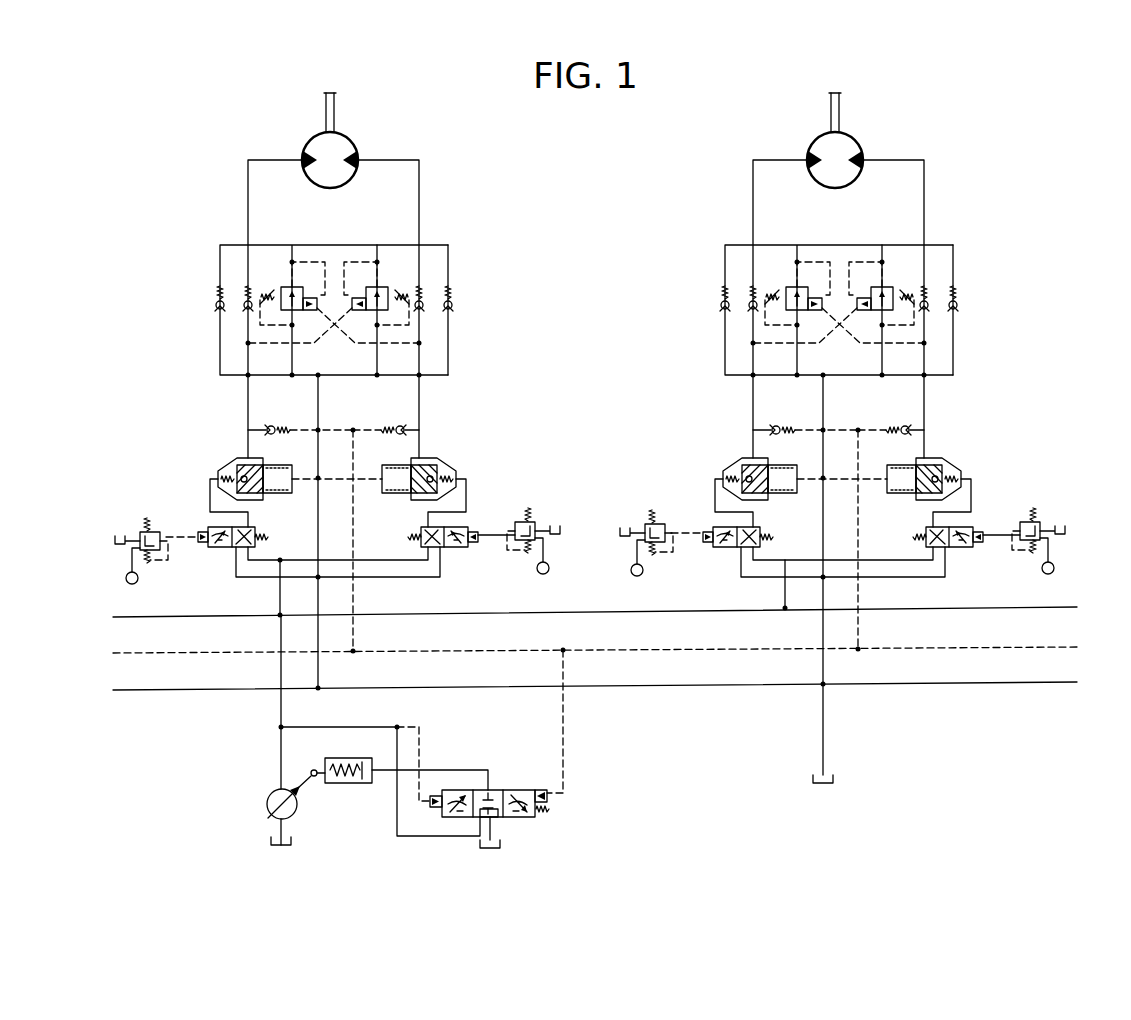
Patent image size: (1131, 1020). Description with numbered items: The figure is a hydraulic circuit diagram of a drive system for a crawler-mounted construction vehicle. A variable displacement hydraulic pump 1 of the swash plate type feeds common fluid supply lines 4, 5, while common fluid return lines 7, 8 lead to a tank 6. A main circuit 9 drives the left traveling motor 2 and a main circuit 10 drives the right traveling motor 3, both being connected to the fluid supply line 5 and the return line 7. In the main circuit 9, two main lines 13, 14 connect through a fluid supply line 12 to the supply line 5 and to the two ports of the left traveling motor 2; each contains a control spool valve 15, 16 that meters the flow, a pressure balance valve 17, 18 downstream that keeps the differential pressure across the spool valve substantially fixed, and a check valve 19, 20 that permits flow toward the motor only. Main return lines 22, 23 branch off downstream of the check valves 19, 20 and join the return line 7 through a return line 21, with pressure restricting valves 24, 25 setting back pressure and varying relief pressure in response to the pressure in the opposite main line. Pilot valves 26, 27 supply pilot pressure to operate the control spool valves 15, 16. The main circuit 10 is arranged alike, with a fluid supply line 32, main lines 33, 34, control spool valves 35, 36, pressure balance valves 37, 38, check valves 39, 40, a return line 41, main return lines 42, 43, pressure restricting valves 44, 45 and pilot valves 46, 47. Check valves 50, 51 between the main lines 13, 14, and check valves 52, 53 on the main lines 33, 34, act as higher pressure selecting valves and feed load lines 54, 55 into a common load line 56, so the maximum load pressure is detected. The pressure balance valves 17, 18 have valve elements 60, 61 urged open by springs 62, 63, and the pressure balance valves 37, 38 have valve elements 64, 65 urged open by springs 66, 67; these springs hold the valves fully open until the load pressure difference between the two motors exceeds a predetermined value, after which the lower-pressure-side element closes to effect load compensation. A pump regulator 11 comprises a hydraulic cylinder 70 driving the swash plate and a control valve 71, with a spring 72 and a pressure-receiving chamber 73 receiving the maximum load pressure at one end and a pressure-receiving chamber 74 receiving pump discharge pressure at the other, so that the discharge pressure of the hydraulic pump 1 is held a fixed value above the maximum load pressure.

The variable displacement hydraulic pump 1 is at (298, 808).
The left traveling motor 2 is at (356, 142).
The right traveling motor 3 is at (819, 140).
The common fluid supply line 4 is at (278, 708).
The common fluid supply line 5 is at (207, 615).
The tank 6 is at (292, 848).
The common fluid return line 7 is at (668, 684).
The common fluid return line 8 is at (826, 710).
The main circuit 9 is at (178, 235).
The main circuit 10 is at (837, 434).
The pump regulator 11 is at (470, 755).
The fluid supply line 12 is at (280, 600).
The main line 13 is at (248, 400).
The main line 14 is at (419, 400).
The control spool valve 15 is at (211, 526).
The control spool valve 16 is at (470, 526).
The pressure balance valve 17 is at (241, 459).
The pressure balance valve 18 is at (438, 459).
The check valve 19 is at (246, 297).
The check valve 20 is at (420, 297).
The return line 21 is at (318, 398).
The main return line 22 is at (288, 248).
The main return line 23 is at (378, 248).
The pressure restricting valve 24 is at (283, 290).
The pressure restricting valve 25 is at (385, 290).
The pilot valve 26 is at (138, 530).
The pilot valve 27 is at (533, 521).
The fluid supply line 32 is at (782, 600).
The main line 33 is at (752, 309).
The main line 34 is at (921, 309).
The control spool valve 35 is at (810, 531).
The control spool valve 36 is at (961, 513).
The pressure balance valve 37 is at (740, 474).
The pressure balance valve 38 is at (950, 475).
The check valve 39 is at (720, 280).
The check valve 40 is at (956, 280).
The return line 41 is at (823, 398).
The main return line 42 is at (836, 296).
The main return line 43 is at (904, 296).
The pressure restricting valve 44 is at (839, 296).
The pressure restricting valve 45 is at (835, 296).
The pilot valve 46 is at (654, 530).
The pilot valve 47 is at (1026, 527).
The check valve 50 is at (272, 425).
The check valve 51 is at (399, 425).
The check valve 52 is at (805, 408).
The check valve 53 is at (891, 408).
The load line 54 is at (354, 597).
The load line 55 is at (859, 597).
The common load line 56 is at (572, 650).
The valve element 60 is at (278, 466).
The valve element 61 is at (396, 466).
The spring 62 is at (216, 478).
The spring 63 is at (458, 478).
The valve element 64 is at (827, 462).
The valve element 65 is at (888, 462).
The spring 66 is at (707, 459).
The spring 67 is at (977, 467).
The hydraulic cylinder 70 is at (345, 758).
The control valve 71 is at (500, 790).
The spring 72 is at (550, 812).
The pressure-receiving chamber 73 is at (550, 790).
The pressure-receiving chamber 74 is at (432, 810).